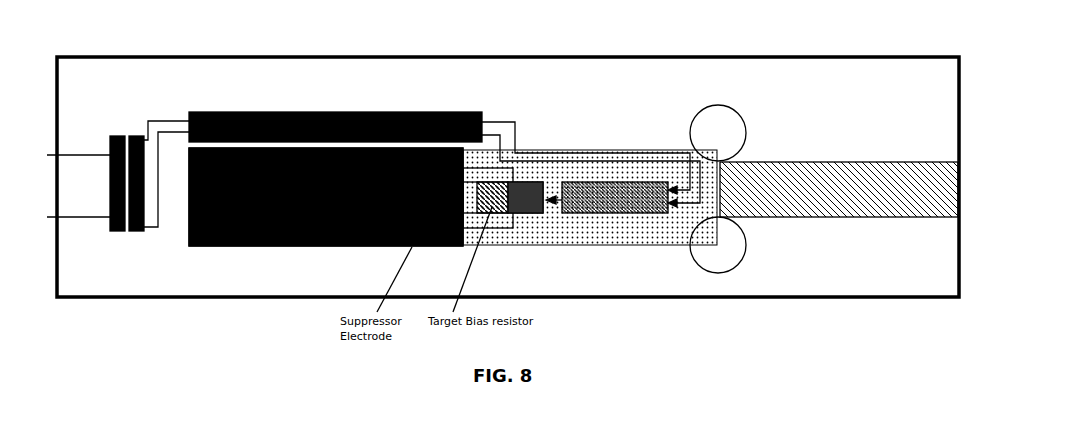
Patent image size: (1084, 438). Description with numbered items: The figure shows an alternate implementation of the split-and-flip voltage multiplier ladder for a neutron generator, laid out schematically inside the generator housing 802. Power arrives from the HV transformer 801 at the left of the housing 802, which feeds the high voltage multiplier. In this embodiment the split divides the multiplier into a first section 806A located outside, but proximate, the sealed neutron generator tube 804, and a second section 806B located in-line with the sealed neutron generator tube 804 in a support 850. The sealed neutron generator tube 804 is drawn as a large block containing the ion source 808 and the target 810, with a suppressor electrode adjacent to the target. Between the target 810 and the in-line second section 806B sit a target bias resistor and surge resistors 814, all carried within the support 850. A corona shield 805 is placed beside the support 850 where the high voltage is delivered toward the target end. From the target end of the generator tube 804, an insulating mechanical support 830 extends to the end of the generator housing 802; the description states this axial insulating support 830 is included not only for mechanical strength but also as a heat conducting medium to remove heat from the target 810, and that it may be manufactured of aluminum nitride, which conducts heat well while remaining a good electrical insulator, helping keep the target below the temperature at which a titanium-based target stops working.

The HV transformer 801 is at (118, 136).
The generator housing 802 is at (848, 57).
The sealed neutron generator tube 804 is at (305, 247).
The corona shield 805 is at (712, 120).
The first section 806A is at (325, 112).
The second section 806B is at (598, 195).
The ion source 808 is at (208, 247).
The target 810 is at (353, 247).
The surge resistor(s) 814 is at (537, 213).
The insulating mechanical support 830 is at (820, 190).
The support 850 is at (650, 237).